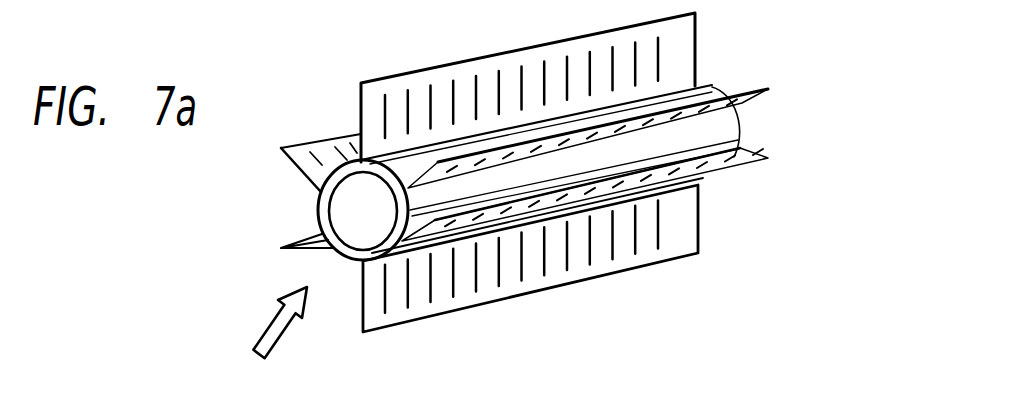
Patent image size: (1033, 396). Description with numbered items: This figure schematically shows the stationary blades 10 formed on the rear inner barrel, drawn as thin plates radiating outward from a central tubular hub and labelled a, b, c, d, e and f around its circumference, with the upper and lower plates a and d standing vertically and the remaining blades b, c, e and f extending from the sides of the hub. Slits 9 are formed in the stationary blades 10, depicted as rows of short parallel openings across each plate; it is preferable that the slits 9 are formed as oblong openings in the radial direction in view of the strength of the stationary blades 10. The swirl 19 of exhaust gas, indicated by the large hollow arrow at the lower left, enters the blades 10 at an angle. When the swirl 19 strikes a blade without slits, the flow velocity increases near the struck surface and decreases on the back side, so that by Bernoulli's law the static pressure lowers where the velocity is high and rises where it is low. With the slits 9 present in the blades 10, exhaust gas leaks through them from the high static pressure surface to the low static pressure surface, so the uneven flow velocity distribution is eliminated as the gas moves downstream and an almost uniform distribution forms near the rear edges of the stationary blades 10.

The stationary blade 10 is at (424, 68).
The slit 9 is at (478, 90).
The swirl 19 is at (266, 327).
The upper fin a is at (537, 82).
The upper right strip fin b is at (596, 131).
The lower right strip fin c is at (595, 194).
The lower fin d is at (539, 258).
The lower left strip fin e is at (297, 248).
The upper left strip fin f is at (311, 163).